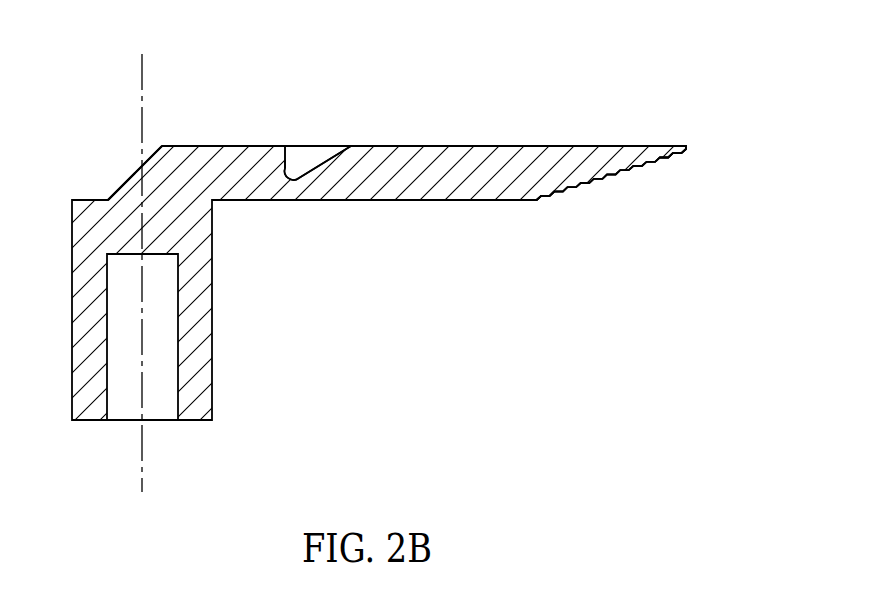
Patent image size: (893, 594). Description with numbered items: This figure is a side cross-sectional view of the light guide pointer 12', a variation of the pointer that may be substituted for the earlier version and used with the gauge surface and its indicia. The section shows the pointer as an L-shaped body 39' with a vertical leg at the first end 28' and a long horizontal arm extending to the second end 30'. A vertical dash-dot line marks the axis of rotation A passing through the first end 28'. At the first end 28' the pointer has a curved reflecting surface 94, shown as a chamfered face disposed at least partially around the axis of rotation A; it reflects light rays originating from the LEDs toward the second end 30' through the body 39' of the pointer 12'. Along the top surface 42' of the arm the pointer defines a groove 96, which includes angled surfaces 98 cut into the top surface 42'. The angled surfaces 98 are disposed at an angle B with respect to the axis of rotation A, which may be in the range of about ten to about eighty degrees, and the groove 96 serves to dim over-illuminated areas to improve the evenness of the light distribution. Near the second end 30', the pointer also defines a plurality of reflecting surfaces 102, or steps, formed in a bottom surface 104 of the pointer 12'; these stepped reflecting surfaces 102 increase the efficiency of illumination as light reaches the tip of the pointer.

The light guide pointer 12' is at (446, 282).
The first end 28' is at (102, 157).
The second end 30' is at (709, 125).
The body 39' is at (370, 218).
The top surface 42' is at (424, 121).
The curved reflecting surface 94 is at (119, 193).
The groove 96 is at (328, 150).
The angled surfaces 98 is at (334, 150).
The reflecting surfaces 102 is at (606, 185).
The bottom surface 104 is at (553, 205).
The axis of rotation A is at (143, 462).
The angle B is at (285, 146).